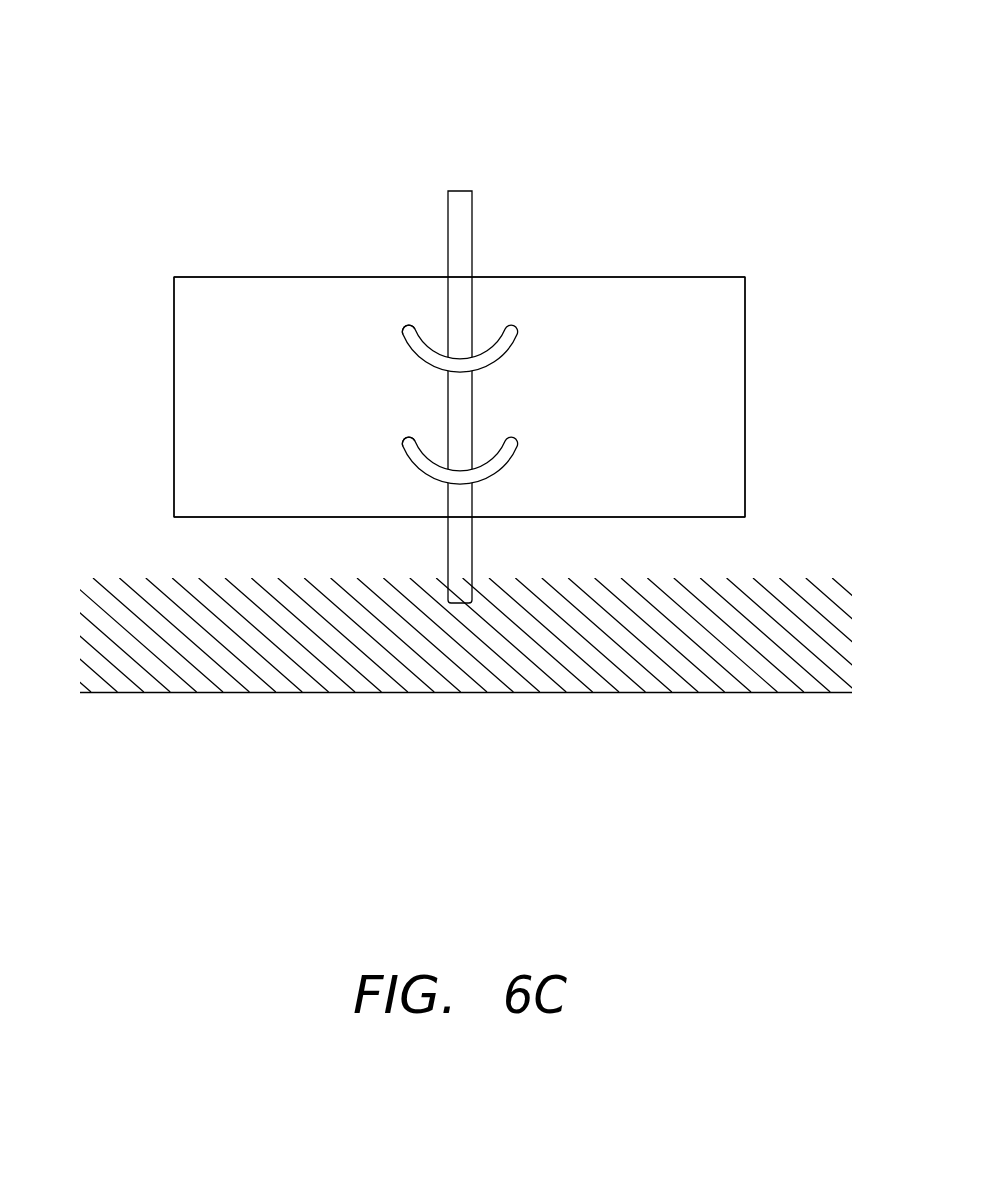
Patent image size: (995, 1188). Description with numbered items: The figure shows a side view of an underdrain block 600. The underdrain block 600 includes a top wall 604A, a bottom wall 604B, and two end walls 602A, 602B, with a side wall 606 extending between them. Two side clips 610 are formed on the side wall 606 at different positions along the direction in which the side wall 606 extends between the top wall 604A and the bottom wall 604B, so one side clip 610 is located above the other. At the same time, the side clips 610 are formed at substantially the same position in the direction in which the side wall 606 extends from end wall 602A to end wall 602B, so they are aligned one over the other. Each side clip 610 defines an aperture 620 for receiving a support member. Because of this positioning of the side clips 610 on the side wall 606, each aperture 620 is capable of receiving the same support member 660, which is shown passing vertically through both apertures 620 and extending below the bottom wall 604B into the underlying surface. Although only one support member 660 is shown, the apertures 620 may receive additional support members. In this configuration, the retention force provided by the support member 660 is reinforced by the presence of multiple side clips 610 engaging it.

The underdrain block 600 is at (481, 364).
The end wall 602A is at (172, 367).
The end wall 602B is at (747, 348).
The top wall 604A is at (625, 277).
The bottom wall 604B is at (632, 517).
The side wall 606 is at (237, 312).
The side clip 610 is at (513, 350).
The aperture 620 is at (433, 335).
The support member 660 is at (472, 237).